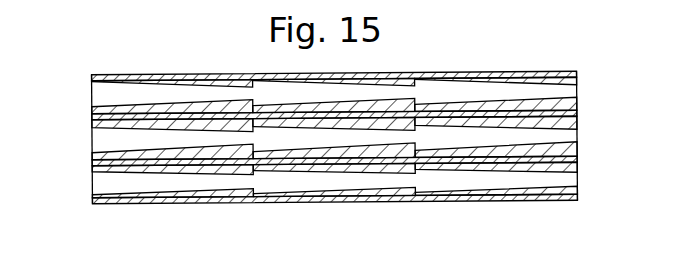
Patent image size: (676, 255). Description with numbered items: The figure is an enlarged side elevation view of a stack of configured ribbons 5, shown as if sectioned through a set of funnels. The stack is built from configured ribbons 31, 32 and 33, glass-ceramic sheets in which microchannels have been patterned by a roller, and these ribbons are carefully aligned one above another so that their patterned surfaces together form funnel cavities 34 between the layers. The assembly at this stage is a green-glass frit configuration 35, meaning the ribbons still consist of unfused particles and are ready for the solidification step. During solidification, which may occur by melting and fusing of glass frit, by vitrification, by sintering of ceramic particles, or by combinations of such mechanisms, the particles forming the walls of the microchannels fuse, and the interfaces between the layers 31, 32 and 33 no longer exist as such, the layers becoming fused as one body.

The stack of configured ribbons 5 is at (92, 93).
The configured ribbon 31 is at (579, 155).
The configured ribbon 32 is at (579, 112).
The configured ribbon 33 is at (579, 70).
The funnel cavity 34 is at (177, 185).
The green-glass frit configuration 35 is at (291, 163).